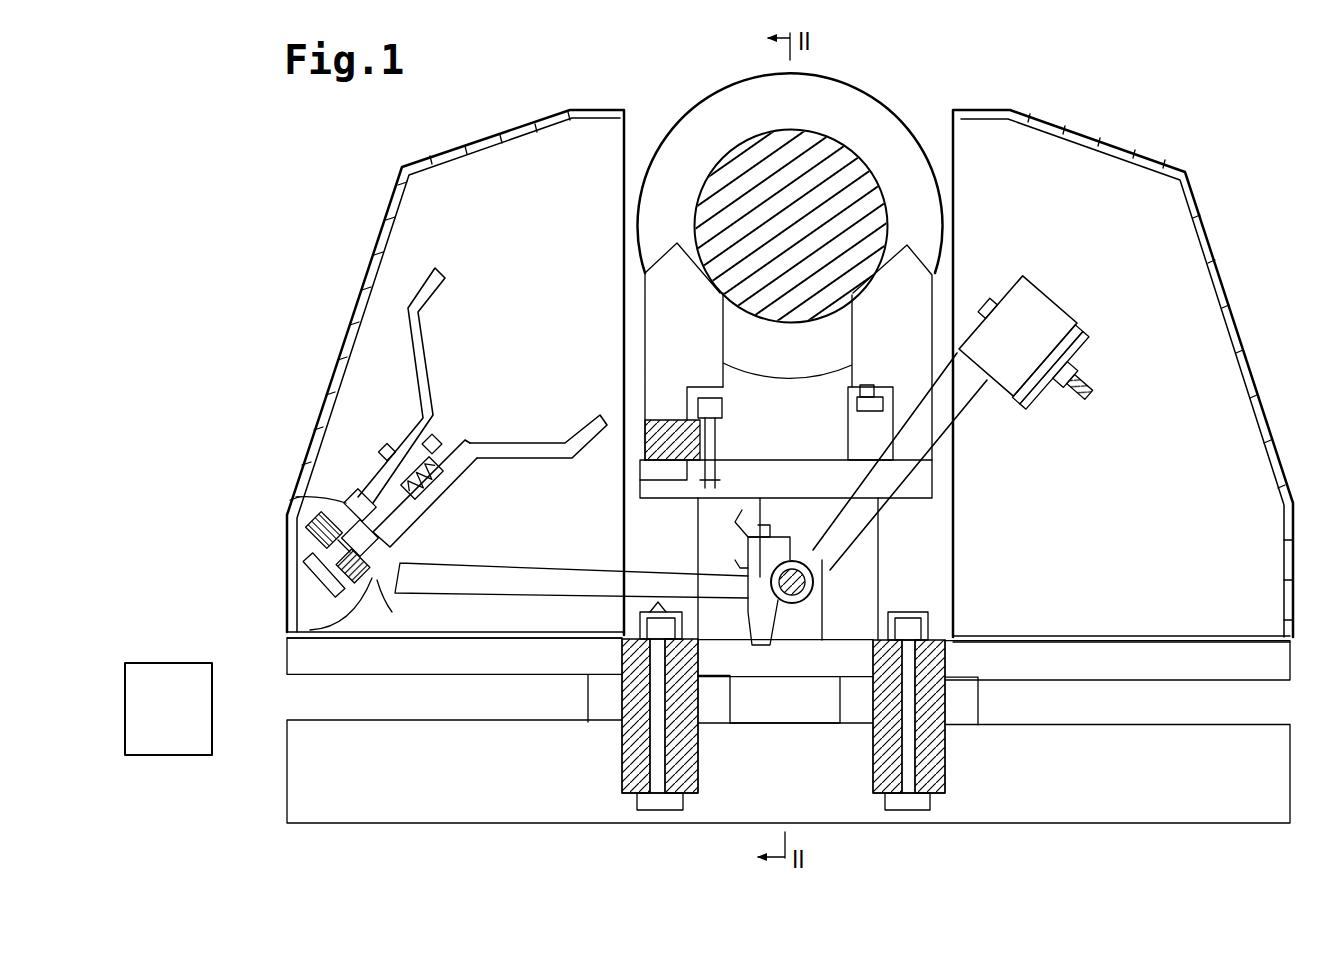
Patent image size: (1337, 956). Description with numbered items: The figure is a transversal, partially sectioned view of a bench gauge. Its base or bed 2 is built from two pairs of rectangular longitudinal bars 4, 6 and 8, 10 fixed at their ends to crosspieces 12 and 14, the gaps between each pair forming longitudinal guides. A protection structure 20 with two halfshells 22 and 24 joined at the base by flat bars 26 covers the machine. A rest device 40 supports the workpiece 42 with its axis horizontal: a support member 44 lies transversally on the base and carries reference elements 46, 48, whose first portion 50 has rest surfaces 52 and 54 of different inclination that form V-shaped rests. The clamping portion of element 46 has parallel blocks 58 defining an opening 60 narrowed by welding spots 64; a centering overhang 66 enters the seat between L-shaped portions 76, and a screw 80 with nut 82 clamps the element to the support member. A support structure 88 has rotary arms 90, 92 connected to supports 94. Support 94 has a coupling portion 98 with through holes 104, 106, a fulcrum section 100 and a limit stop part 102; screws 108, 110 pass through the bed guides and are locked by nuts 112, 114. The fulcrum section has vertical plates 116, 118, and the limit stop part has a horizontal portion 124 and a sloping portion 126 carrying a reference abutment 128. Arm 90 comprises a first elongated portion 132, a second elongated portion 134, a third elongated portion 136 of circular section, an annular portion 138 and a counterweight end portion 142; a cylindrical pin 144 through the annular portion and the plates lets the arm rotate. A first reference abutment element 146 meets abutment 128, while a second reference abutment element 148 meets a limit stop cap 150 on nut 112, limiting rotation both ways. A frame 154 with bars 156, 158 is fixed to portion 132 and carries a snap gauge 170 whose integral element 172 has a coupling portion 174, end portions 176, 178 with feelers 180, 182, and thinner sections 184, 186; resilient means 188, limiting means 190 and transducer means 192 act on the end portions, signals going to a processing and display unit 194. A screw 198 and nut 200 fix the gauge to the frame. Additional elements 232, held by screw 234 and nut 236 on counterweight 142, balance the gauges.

The base 2 is at (1298, 728).
The longitudinal bar 4 is at (612, 716).
The longitudinal bar 6 is at (727, 716).
The longitudinal bar 8 is at (865, 716).
The longitudinal bar 10 is at (962, 718).
The crosspiece 12 is at (345, 805).
The crosspiece 14 is at (638, 800).
The protection structure 20 is at (1160, 150).
The halfshell 22 is at (522, 140).
The halfshell 24 is at (1082, 150).
The flat bar 26 is at (1232, 668).
The rest device 40 is at (903, 236).
The workpiece 42 is at (860, 103).
The support member 44 is at (902, 546).
The reference element 46 is at (636, 324).
The reference element 48 is at (945, 282).
The first portion 50 is at (661, 292).
The rest surface 52 is at (690, 240).
The rest surface 54 is at (658, 252).
The block 58 is at (720, 440).
The opening 60 is at (724, 452).
The welding spot 64 is at (722, 446).
The centering overhang 66 is at (642, 468).
The L-shaped portion 76 is at (727, 462).
The screw 80 is at (708, 398).
The nut 82 is at (692, 412).
The support structure 88 is at (368, 622).
The rotary arm 90 is at (470, 618).
The rotary arm 92 is at (310, 520).
The support 94 is at (822, 585).
The coupling portion 98 is at (598, 657).
The fulcrum section 100 is at (845, 618).
The limit stop part 102 is at (776, 525).
The through hole 104 is at (622, 658).
The through hole 106 is at (958, 665).
The screw 108 is at (664, 812).
The screw 110 is at (922, 806).
The nut 112 is at (700, 638).
The nut 114 is at (932, 634).
The rectangular plate 116 is at (750, 612).
The rectangular plate 118 is at (812, 636).
The horizontal portion 124 is at (760, 512).
The sloping portion 126 is at (730, 540).
The reference abutment 128 is at (740, 530).
The first elongated portion 132 is at (392, 598).
The second elongated portion 134 is at (547, 570).
The third elongated portion 136 is at (958, 398).
The annular portion 138 is at (815, 580).
The counterweight end portion 142 is at (1037, 300).
The cylindrical pin 144 is at (812, 598).
The first reference abutment element 146 is at (722, 566).
The second reference abutment element 148 is at (658, 610).
The limit stop cap 150 is at (638, 618).
The frame 154 is at (312, 592).
The bar 156 is at (335, 546).
The bar 158 is at (322, 626).
The gauge 170 is at (418, 272).
The integral element 172 is at (427, 346).
The coupling portion 174 is at (318, 520).
The end portion 176 is at (525, 452).
The end portion 178 is at (344, 446).
The feeler 180 is at (595, 418).
The feeler 182 is at (448, 288).
The thinner section portion 184 is at (402, 540).
The thinner section portion 186 is at (352, 506).
The resilient means 188 is at (430, 508).
The limiting means 190 is at (387, 444).
The transducer means 192 is at (434, 437).
The processing and display unit 194 is at (178, 662).
The screw 198 is at (340, 562).
The nut 200 is at (378, 548).
The additional element 232 is at (1090, 335).
The screw 234 is at (1095, 392).
The nut 236 is at (1092, 368).